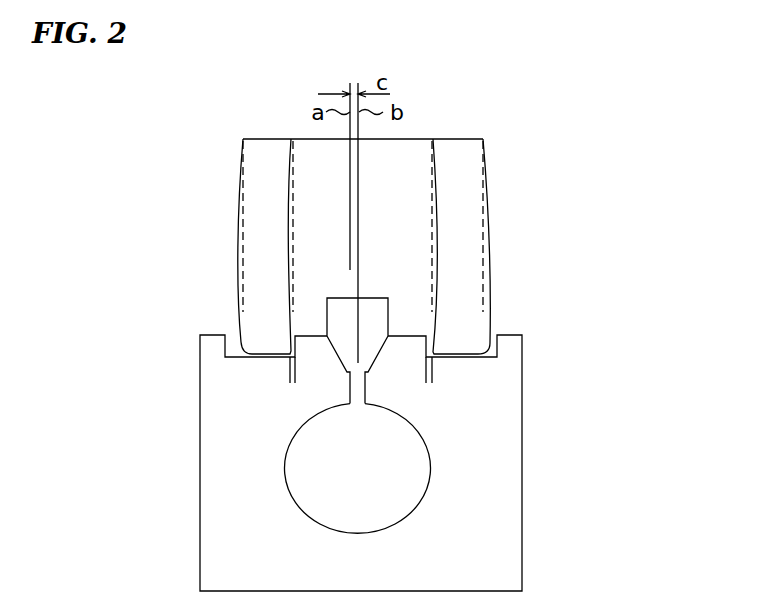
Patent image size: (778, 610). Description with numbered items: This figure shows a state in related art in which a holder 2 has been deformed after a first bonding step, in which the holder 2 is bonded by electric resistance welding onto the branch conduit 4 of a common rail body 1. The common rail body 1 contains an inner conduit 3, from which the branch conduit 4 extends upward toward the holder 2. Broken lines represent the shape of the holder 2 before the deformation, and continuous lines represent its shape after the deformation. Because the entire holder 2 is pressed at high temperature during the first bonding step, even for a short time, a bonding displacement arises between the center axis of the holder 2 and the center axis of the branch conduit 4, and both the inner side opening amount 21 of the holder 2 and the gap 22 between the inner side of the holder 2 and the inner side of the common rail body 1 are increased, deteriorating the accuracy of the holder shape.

The common rail body 1 is at (461, 565).
The holder 2 is at (450, 263).
The inner conduit 3 is at (351, 478).
The branch conduit 4 is at (375, 308).
The inner side opening amount 21 is at (303, 376).
The gap between inner side of holder and inner side of common rail body 22 is at (398, 373).